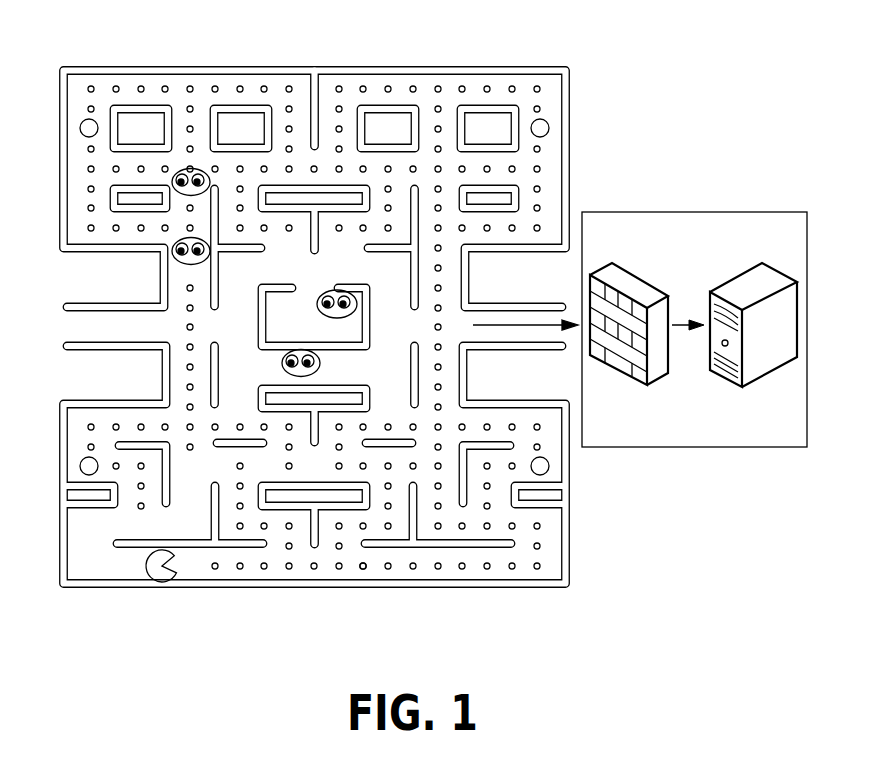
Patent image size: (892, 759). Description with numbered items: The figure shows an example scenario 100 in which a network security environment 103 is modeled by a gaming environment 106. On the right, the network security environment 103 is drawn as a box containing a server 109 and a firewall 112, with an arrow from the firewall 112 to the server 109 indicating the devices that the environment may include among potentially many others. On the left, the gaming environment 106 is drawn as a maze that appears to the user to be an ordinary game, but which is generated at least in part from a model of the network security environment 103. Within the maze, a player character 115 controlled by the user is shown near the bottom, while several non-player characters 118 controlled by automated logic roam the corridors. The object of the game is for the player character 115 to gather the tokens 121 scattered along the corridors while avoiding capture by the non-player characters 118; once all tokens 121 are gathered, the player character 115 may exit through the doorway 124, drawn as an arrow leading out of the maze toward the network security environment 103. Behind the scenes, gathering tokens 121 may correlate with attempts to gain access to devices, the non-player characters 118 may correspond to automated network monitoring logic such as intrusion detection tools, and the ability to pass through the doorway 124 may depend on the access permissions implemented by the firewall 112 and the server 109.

The example scenario 100 is at (436, 372).
The network security environment 103 is at (750, 235).
The gaming environment 106 is at (202, 82).
The server 109 is at (773, 355).
The firewall 112 is at (615, 363).
The player character 115 is at (163, 567).
The non-player characters 118 is at (173, 257).
The tokens 121 is at (366, 568).
The doorway 124 is at (472, 325).